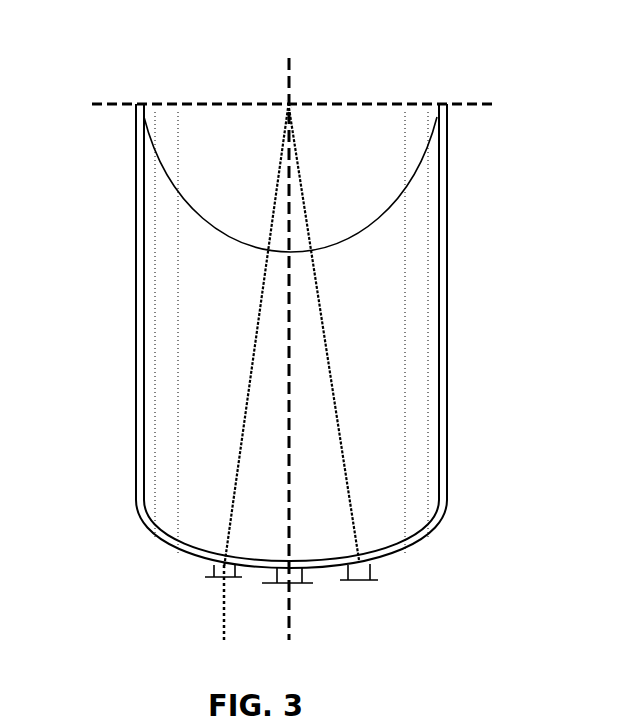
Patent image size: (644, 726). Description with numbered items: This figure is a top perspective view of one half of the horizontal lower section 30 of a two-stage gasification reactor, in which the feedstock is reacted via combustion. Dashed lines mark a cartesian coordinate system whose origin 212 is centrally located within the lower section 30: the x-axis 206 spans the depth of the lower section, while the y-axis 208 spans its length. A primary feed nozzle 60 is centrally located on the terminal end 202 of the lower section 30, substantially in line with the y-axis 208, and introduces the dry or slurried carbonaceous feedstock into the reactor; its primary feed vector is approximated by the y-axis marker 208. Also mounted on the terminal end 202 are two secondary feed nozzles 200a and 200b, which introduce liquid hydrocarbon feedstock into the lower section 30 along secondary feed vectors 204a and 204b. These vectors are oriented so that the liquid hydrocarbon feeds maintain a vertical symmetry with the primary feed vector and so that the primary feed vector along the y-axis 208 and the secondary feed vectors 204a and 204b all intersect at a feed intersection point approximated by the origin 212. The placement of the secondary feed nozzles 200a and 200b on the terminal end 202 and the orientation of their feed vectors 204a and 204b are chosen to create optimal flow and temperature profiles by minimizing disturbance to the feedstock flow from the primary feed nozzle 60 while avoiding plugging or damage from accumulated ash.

The lower section 30 is at (472, 328).
The terminal end 202 is at (413, 547).
The origin 212 is at (295, 97).
The x-axis 206 is at (204, 99).
The y-axis 208 is at (297, 445).
The secondary feed vector 204a is at (247, 362).
The secondary feed vector 204b is at (342, 389).
The secondary feed nozzle 200a is at (213, 594).
The secondary feed nozzle 200b is at (373, 596).
The primary feed nozzle 60 is at (304, 608).